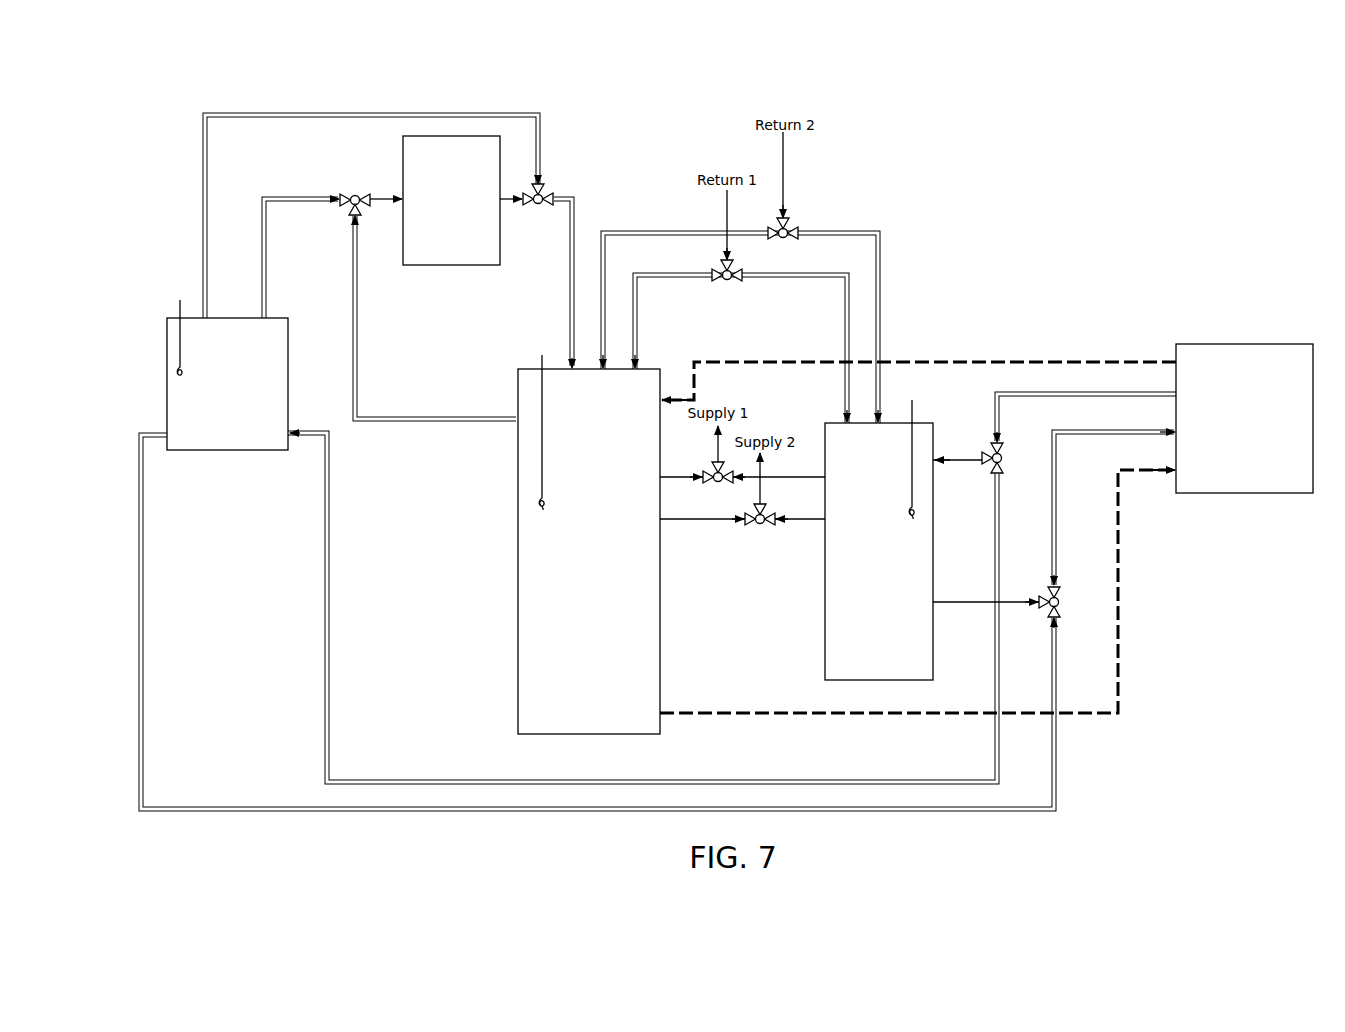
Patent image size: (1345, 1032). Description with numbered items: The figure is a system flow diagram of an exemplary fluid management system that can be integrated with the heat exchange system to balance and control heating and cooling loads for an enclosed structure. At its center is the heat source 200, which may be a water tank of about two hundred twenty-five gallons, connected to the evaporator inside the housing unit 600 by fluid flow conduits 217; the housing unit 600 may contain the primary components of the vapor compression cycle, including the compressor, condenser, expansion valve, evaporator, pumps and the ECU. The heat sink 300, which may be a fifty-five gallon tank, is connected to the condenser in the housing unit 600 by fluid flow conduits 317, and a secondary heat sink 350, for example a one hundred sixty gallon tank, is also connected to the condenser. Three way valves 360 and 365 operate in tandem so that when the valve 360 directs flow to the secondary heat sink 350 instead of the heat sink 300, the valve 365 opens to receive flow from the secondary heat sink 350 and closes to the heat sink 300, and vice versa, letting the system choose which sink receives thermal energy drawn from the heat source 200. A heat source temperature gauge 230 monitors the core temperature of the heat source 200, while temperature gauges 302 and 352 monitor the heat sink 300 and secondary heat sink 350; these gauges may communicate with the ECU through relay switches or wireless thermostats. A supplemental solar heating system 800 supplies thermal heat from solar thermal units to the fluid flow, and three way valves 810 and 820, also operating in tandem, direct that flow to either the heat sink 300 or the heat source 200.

The heat source 200 is at (589, 551).
The fluid flow conduits 217 is at (999, 359).
The heat source temperature gauge 230 is at (544, 388).
The heat sink 300 is at (227, 384).
The temperature gauge 302 is at (179, 298).
The fluid flow conduits 317 is at (1059, 785).
The secondary heat sink 350 is at (879, 551).
The temperature gauge 352 is at (913, 402).
The three way valve 360 is at (1002, 458).
The three way valve 365 is at (1064, 611).
The housing unit 600 is at (1244, 418).
The supplemental solar heating system 800 is at (451, 200).
The three way valve 810 is at (356, 190).
The three way valve 820 is at (556, 186).